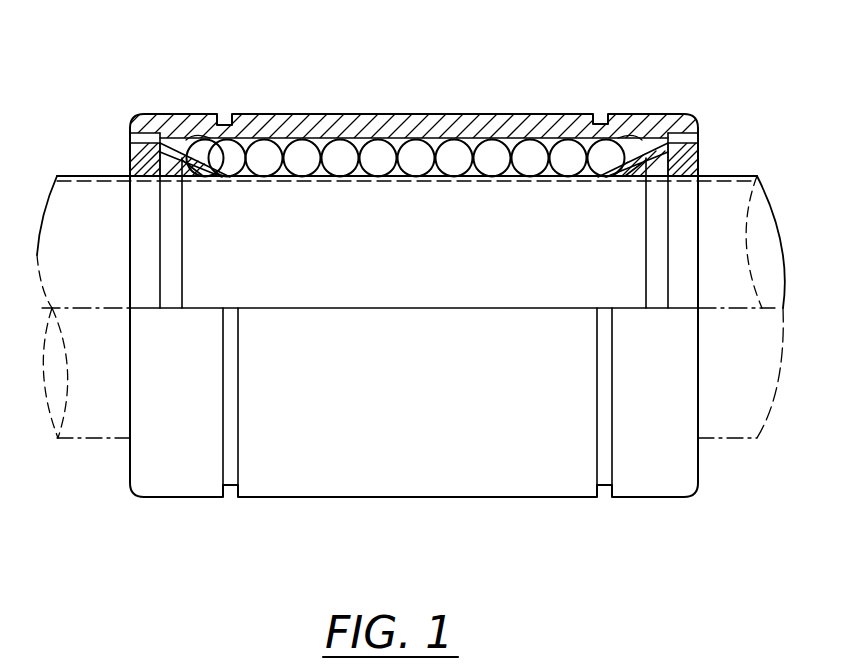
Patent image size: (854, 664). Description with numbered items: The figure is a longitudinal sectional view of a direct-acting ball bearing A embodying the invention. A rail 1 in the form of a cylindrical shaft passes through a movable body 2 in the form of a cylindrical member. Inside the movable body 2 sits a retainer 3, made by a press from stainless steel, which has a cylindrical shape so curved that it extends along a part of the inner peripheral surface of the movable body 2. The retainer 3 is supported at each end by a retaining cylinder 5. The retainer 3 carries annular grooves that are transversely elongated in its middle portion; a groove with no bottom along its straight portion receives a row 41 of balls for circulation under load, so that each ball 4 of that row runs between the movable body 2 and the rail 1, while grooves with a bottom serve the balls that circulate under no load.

The rail 1 is at (112, 440).
The movable body 2 is at (486, 116).
The retainer 3 is at (192, 180).
The ball 4 is at (340, 148).
The row of balls for circulation under load 41 is at (406, 112).
The retaining cylinder 5 is at (698, 146).
The direct-acting ball bearing A is at (259, 70).